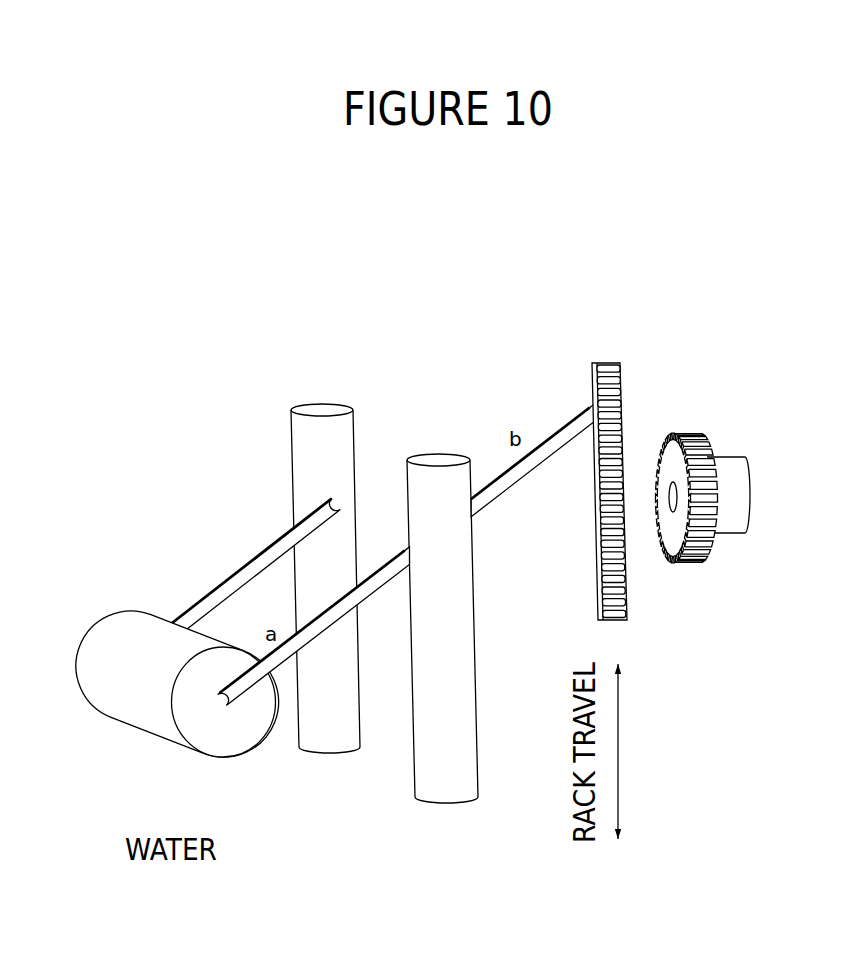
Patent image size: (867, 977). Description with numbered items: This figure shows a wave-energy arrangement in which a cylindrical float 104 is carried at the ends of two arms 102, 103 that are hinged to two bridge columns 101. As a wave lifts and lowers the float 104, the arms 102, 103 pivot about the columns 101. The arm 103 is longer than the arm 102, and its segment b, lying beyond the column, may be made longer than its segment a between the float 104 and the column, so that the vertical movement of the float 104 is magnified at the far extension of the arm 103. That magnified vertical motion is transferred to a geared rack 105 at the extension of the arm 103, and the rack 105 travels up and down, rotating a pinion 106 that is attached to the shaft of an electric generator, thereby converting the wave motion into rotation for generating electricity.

The bridge columns 101 is at (439, 452).
The arm 102 is at (219, 579).
The arm 103 is at (493, 506).
The float 104 is at (99, 613).
The geared rack 105 is at (623, 436).
The pinion 106 is at (697, 565).